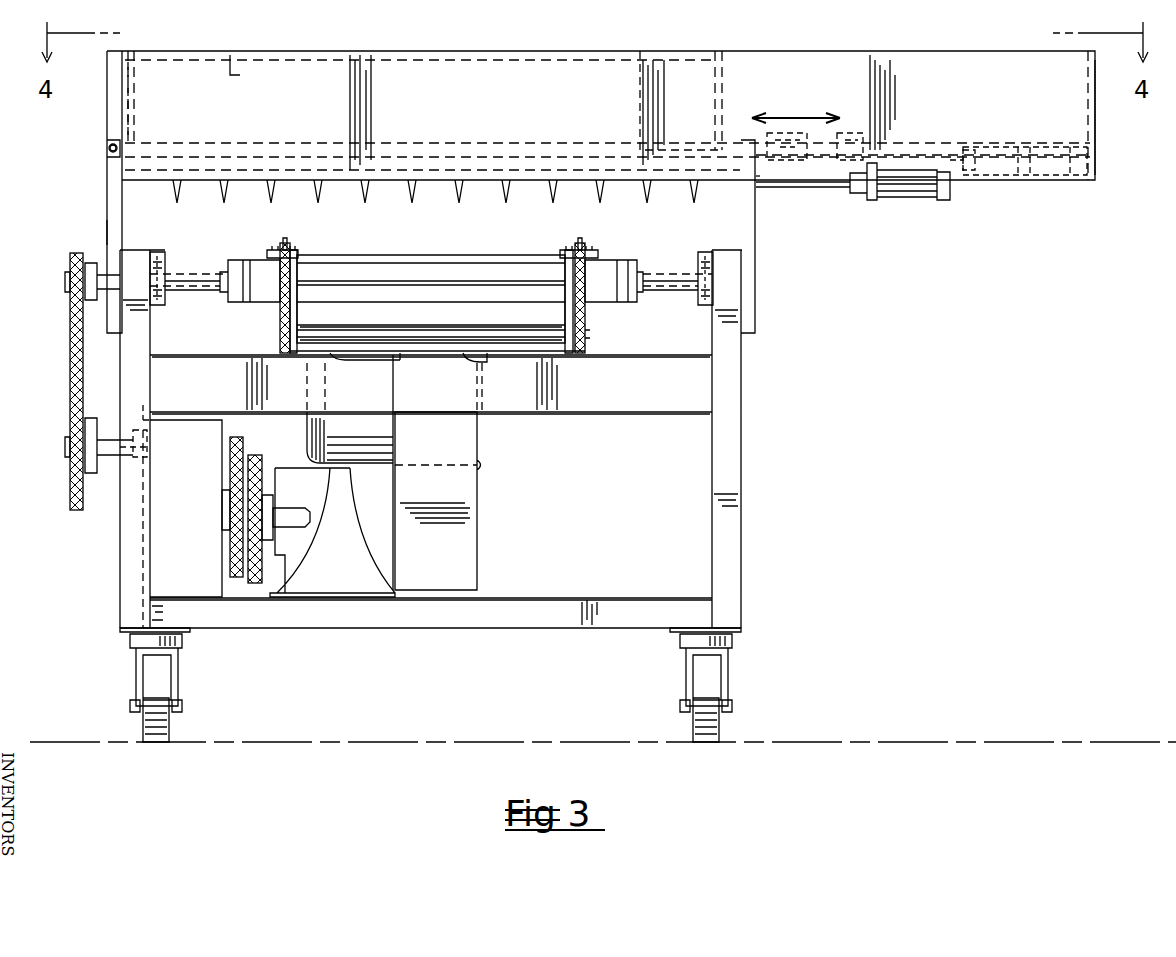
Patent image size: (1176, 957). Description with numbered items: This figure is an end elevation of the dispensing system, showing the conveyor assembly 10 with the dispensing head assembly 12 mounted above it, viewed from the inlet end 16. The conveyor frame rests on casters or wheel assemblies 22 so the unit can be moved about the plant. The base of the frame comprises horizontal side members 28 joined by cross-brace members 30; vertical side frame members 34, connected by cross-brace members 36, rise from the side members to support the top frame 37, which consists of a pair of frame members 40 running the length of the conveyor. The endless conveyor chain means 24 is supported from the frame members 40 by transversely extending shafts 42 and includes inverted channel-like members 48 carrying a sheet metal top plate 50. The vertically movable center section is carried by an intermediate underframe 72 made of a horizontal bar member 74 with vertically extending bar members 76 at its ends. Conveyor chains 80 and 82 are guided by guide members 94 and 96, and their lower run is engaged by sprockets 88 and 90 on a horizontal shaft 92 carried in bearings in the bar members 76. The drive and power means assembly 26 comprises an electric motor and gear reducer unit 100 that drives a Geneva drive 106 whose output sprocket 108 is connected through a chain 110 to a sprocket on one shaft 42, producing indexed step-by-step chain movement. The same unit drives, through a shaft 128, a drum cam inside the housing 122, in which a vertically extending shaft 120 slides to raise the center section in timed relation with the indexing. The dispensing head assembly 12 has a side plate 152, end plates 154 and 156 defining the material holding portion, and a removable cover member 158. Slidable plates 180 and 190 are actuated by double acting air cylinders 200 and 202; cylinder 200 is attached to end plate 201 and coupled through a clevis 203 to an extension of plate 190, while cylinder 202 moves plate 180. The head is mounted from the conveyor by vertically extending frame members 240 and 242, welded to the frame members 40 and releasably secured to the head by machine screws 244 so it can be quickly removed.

The conveyor assembly 10 is at (55, 172).
The dispensing head assembly 12 is at (508, 40).
The inlet end 16 is at (663, 228).
The casters or wheel assemblies 22 is at (198, 682).
The endless conveyor chain means 24 is at (228, 228).
The drive and power means assembly 26 is at (116, 542).
The side members 28 is at (120, 620).
The cross-brace members 30 is at (390, 632).
The side frame members 34 is at (152, 398).
The cross-brace members 36 is at (522, 414).
The top frame 37 is at (688, 256).
The frame members 40 is at (155, 306).
The transversely extending shafts 42 is at (200, 285).
The inverted channel-like members 48 is at (398, 304).
The sheet metal top plate 50 is at (385, 255).
The intermediate underframe 72 is at (589, 336).
The horizontal bar member 74 is at (338, 355).
The vertically extending bar members 76 is at (565, 318).
The conveyor chain 80 is at (580, 244).
The conveyor chain 82 is at (287, 244).
The sprocket 88 is at (279, 350).
The sprocket 90 is at (587, 357).
The horizontal shaft 92 is at (372, 326).
The guide member 94 is at (302, 252).
The guide member 96 is at (560, 250).
The electric motor and gear reducer unit 100 is at (500, 498).
The Geneva drive 106 is at (178, 595).
The output sprocket 108 is at (68, 452).
The chain 110 is at (68, 347).
The vertically extending shaft 120 is at (473, 356).
The housing 122 is at (483, 480).
The shaft 128 is at (310, 527).
The side plate 152 is at (233, 75).
The plate 154 is at (735, 108).
The plate 156 is at (140, 100).
The removable cover member 158 is at (605, 55).
The plate 180 is at (762, 190).
The plate 190 is at (890, 155).
The air cylinder 200 is at (1070, 178).
The end plate 201 is at (1097, 98).
The air cylinder 202 is at (874, 200).
The clevis 203 is at (972, 148).
The vertically extending frame member 240 is at (758, 266).
The vertically extending frame member 242 is at (105, 232).
The machine screws 244 is at (108, 148).